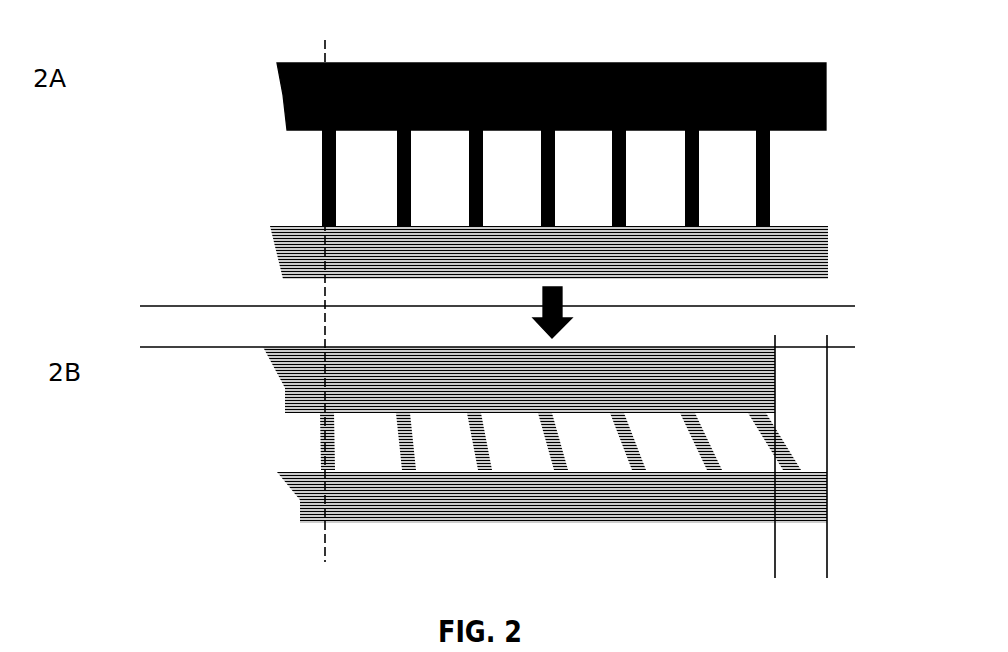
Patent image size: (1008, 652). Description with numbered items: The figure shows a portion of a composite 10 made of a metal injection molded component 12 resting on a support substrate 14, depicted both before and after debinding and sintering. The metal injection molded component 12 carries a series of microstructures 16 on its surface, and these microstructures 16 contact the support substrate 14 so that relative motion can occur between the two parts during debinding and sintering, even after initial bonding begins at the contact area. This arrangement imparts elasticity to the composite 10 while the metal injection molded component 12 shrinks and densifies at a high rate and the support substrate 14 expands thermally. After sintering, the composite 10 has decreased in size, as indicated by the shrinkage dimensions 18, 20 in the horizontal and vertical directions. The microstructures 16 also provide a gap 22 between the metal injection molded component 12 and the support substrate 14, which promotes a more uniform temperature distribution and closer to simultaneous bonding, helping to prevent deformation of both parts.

The composite 10 is at (222, 32).
The metal injection molded component 12 is at (695, 64).
The support substrate 14 is at (803, 232).
The microstructures 16 is at (466, 165).
The shrinkage dimension 18 is at (825, 558).
The shrinkage dimension 20 is at (225, 309).
The gap 22 is at (840, 410).